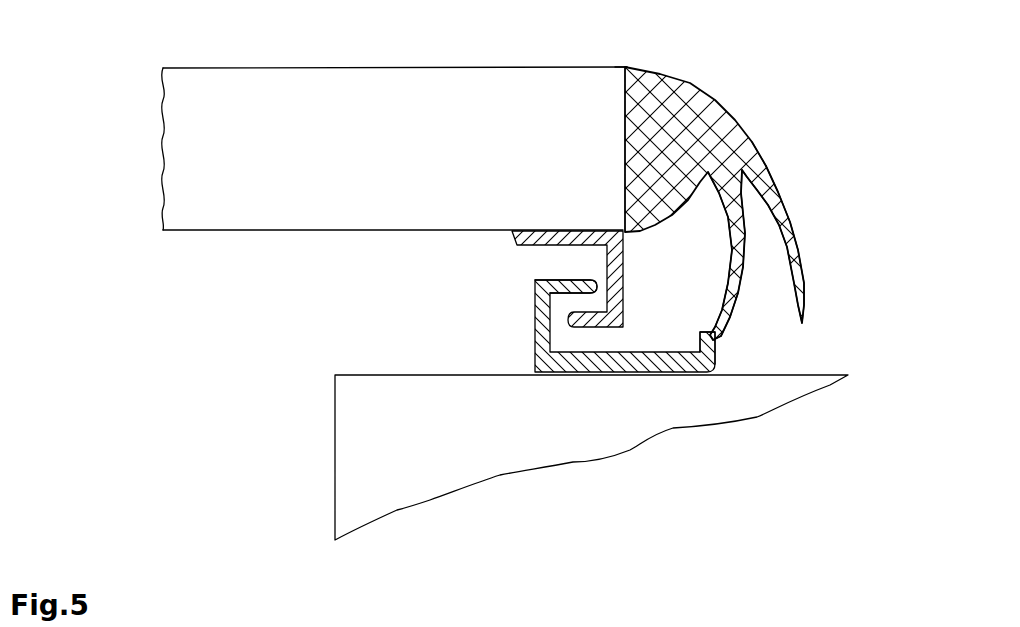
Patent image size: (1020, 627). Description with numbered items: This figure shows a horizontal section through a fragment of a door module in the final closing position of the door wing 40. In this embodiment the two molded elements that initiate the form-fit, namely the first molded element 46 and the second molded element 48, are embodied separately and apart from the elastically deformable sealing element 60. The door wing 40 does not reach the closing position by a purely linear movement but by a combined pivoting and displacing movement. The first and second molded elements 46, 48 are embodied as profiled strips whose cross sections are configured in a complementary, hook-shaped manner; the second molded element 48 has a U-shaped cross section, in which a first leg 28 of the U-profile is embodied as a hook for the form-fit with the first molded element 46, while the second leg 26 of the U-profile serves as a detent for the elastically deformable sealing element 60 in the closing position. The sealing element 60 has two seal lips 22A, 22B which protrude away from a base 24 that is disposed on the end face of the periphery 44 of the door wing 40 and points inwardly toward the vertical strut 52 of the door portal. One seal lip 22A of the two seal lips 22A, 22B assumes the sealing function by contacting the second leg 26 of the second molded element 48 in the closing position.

The door wing 40 is at (225, 218).
The periphery of the door wing 44 is at (598, 113).
The base 24 is at (677, 90).
The elastically deformable sealing element 60 is at (764, 113).
The first molded element 46 is at (578, 242).
The first leg of the U-profile 28 is at (544, 288).
The second molded element 48 is at (535, 345).
The second leg of the U-profile 26 is at (700, 344).
The seal lip 22A is at (732, 313).
The seal lip 22B is at (803, 278).
The vertical strut of the door portal 52 is at (713, 412).